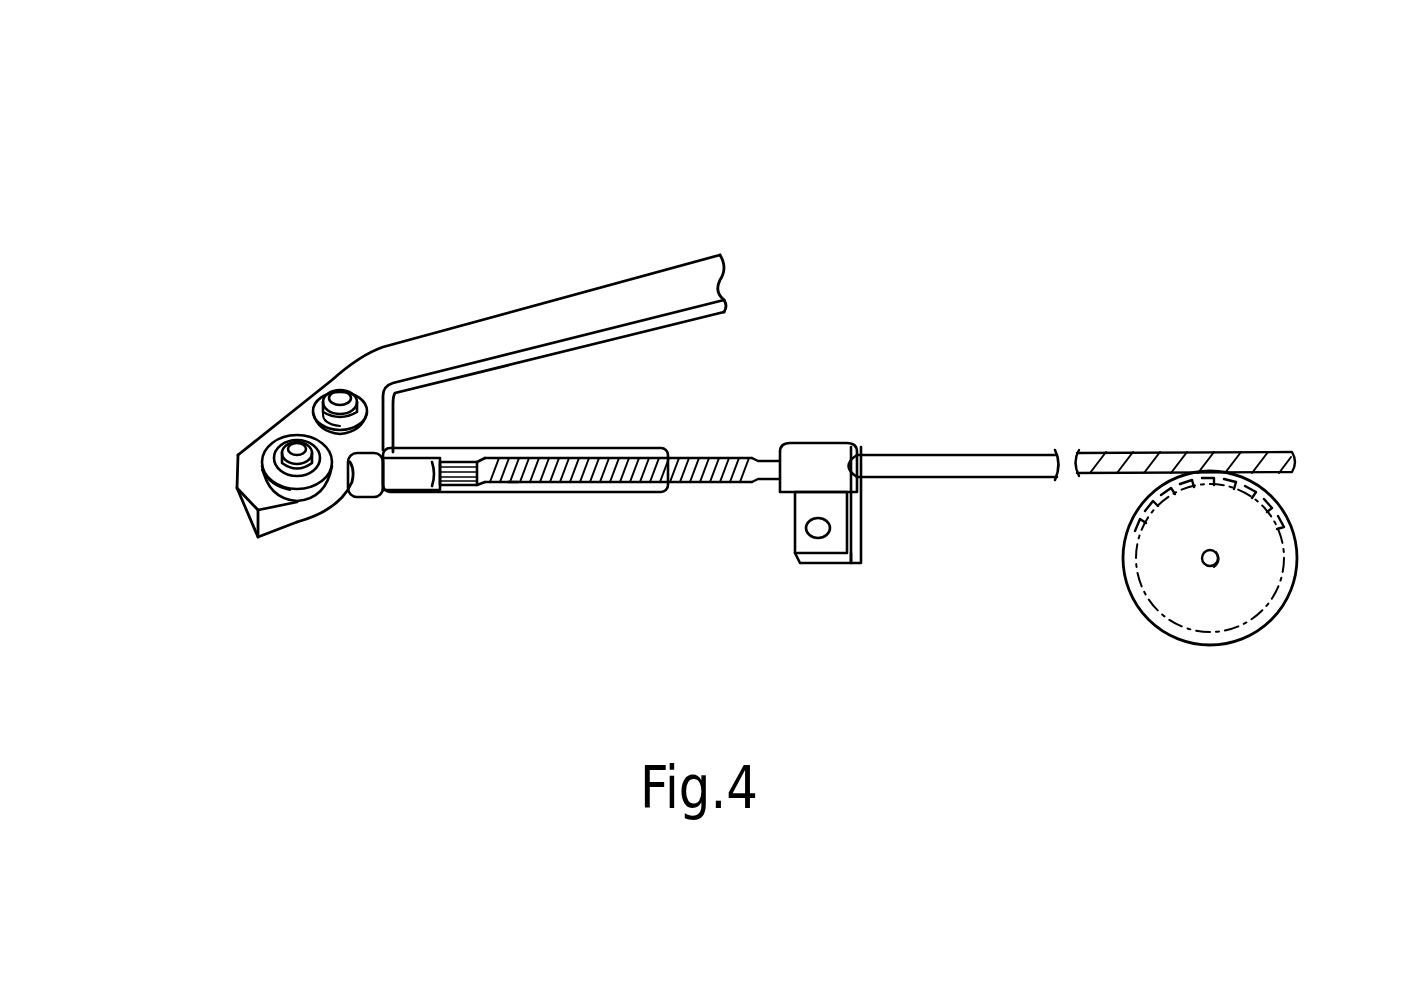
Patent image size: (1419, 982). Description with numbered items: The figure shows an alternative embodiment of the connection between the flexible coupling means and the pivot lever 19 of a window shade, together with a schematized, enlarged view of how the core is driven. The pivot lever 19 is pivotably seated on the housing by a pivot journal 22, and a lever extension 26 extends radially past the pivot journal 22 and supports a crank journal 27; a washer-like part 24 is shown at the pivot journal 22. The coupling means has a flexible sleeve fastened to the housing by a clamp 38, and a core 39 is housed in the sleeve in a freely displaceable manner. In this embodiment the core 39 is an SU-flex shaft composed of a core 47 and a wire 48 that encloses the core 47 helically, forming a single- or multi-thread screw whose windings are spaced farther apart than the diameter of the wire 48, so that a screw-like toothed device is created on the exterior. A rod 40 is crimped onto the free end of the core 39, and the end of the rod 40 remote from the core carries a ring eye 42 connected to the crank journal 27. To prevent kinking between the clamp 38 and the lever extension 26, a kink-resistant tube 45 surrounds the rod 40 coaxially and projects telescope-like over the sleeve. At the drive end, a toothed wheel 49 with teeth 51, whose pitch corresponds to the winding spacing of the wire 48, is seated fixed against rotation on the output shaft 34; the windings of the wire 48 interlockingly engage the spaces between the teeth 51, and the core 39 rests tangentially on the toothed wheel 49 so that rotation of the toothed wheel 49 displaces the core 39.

The pivot lever 19 is at (557, 318).
The pivot journal 22 is at (340, 395).
The washer 24 is at (367, 410).
The lever extension 26 is at (282, 418).
The crank journal 27 is at (263, 463).
The output shaft 34 is at (1208, 568).
The clamp 38 is at (833, 540).
The core 39 is at (513, 481).
The rod 40 is at (402, 472).
The ring eye 42 is at (295, 492).
The kink-resistant tube 45 is at (597, 493).
The core 47 is at (578, 470).
The wire 48 is at (716, 487).
The toothed wheel 49 is at (1257, 620).
The teeth 51 is at (1262, 487).